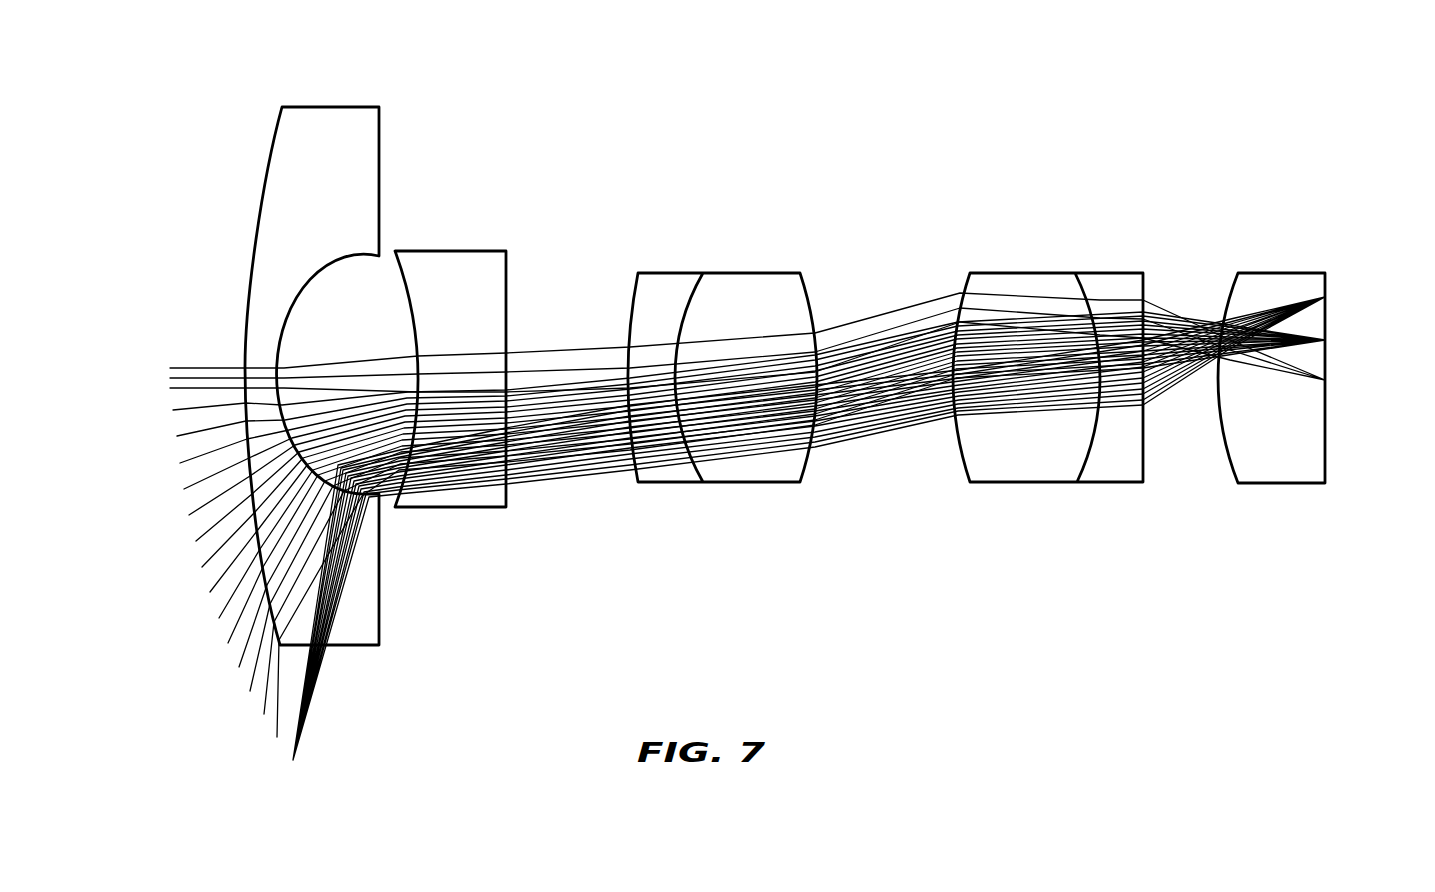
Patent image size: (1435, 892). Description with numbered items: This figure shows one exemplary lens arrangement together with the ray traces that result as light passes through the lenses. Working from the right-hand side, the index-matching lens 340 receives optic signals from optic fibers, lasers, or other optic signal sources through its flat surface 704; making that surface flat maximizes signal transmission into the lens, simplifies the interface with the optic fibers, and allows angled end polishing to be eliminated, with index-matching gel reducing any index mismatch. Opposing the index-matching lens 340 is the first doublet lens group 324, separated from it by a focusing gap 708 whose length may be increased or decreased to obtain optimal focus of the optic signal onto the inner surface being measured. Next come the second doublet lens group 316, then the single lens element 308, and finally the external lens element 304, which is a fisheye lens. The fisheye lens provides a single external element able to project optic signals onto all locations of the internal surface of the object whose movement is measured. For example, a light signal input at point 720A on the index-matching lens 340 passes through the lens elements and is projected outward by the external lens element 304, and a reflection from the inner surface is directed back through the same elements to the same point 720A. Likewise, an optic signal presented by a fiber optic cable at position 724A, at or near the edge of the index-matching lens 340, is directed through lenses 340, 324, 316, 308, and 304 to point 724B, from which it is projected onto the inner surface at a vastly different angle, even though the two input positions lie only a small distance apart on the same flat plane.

The external lens element 304 is at (380, 618).
The single lens element 308 is at (432, 507).
The second doublet lens group 316 is at (755, 483).
The first doublet lens group 324 is at (1053, 483).
The index-matching lens 340 is at (1273, 462).
The flat surface 704 is at (1332, 453).
The focusing gap 708 is at (1198, 484).
The light signal input point 720A is at (172, 393).
The input position near lens edge 724A is at (1325, 297).
The output point of fisheye lens 724B is at (296, 760).